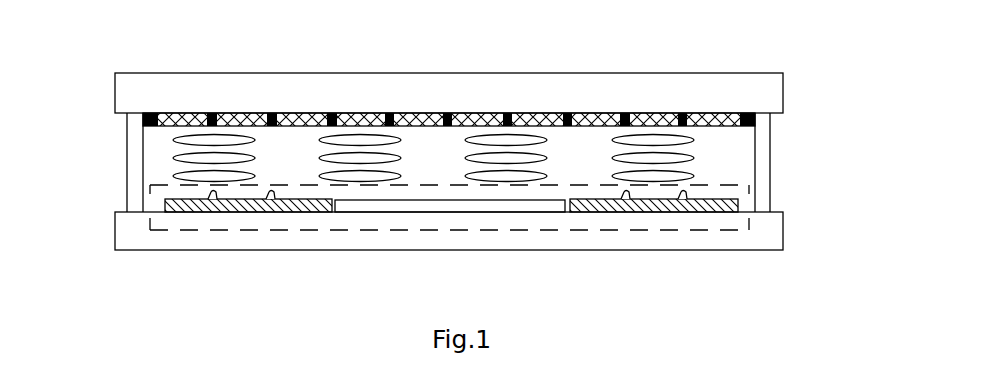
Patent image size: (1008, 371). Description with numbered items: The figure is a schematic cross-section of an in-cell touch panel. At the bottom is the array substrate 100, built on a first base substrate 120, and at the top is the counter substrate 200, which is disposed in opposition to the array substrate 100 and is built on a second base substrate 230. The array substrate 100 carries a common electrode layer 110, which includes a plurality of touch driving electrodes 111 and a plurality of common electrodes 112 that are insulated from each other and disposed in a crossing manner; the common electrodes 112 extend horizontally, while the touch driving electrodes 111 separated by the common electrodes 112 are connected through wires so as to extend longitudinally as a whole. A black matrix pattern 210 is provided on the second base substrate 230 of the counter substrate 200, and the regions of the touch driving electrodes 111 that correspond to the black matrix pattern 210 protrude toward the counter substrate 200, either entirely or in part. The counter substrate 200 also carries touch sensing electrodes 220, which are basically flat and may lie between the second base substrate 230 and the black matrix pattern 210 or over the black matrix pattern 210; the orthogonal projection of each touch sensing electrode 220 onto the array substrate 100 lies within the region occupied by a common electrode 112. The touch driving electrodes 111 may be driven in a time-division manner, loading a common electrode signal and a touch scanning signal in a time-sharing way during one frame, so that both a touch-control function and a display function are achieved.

The array substrate 100 is at (108, 187).
The common electrode layer 110 is at (449, 255).
The touch driving electrode 111 is at (435, 240).
The common electrode 112 is at (450, 244).
The first base substrate 120 is at (508, 206).
The counter substrate 200 is at (108, 73).
The black matrix pattern 210 is at (449, 80).
The touch sensing electrode 220 is at (448, 113).
The second base substrate 230 is at (490, 79).